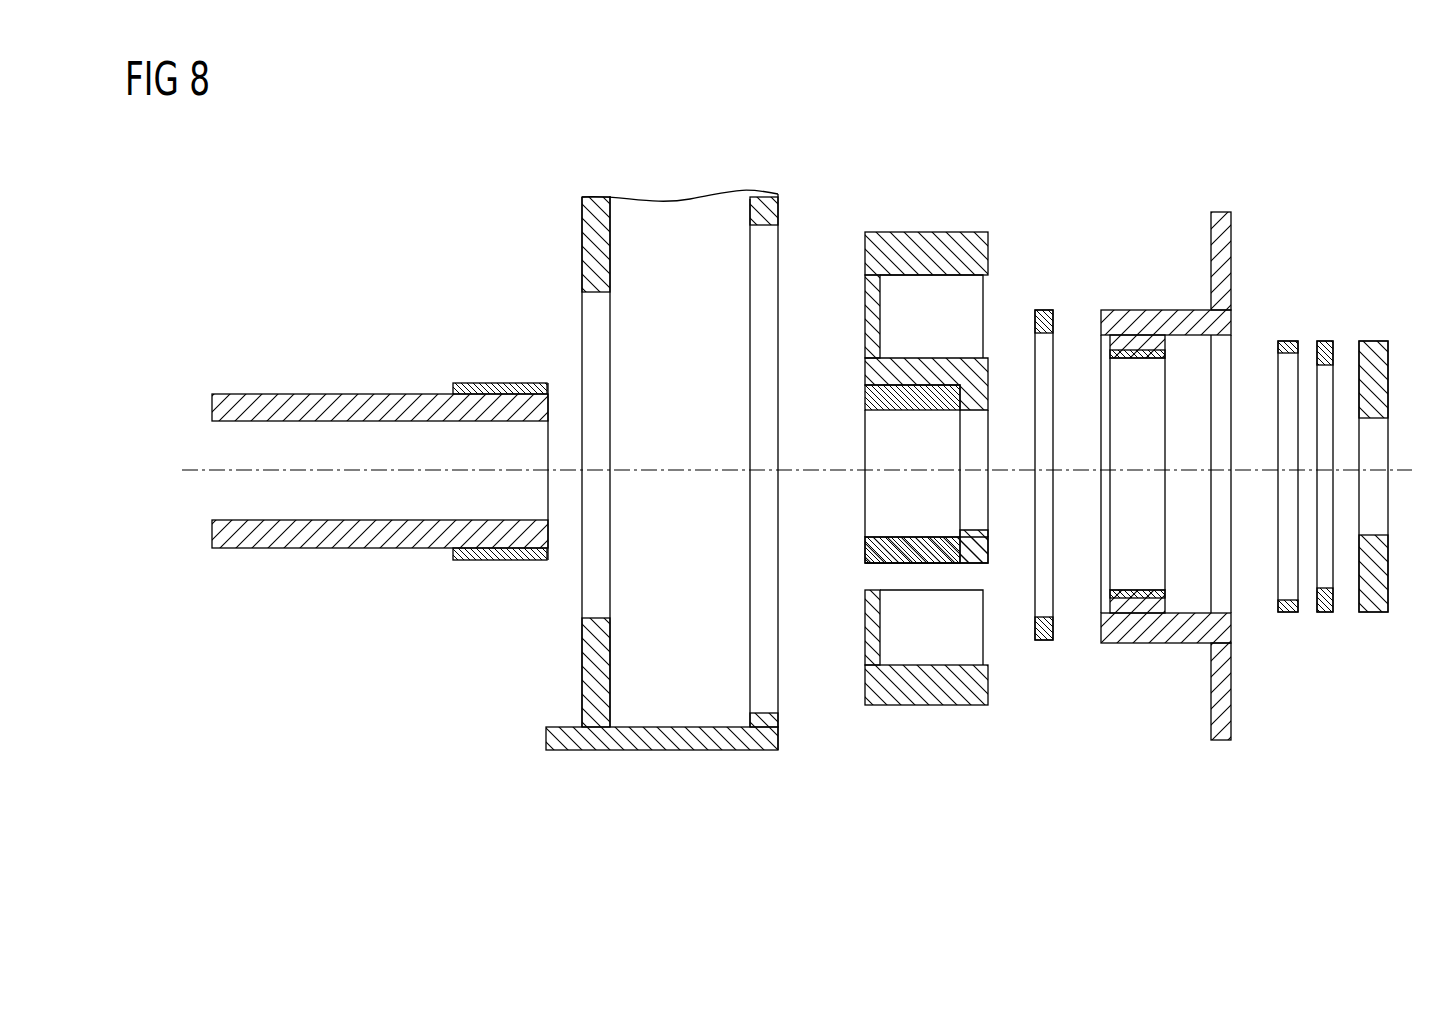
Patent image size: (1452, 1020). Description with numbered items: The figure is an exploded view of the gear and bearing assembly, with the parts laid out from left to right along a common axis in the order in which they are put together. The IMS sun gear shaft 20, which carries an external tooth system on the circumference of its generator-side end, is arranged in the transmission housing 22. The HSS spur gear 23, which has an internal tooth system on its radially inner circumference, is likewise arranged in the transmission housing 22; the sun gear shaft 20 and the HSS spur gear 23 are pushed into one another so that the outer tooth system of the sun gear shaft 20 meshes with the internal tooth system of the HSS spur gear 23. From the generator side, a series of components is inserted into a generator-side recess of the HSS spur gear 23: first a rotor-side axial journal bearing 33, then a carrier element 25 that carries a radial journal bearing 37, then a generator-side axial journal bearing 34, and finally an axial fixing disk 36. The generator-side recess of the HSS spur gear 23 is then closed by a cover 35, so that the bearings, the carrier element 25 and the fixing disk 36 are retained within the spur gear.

The IMS sun gear shaft 20 is at (278, 412).
The transmission housing 22 is at (665, 750).
The HSS spur gear 23 is at (921, 240).
The carrier element 25 is at (1222, 211).
The rotor-side axial journal bearing 33 is at (1042, 310).
The generator-side axial journal bearing 34 is at (1285, 340).
The cover 35 is at (1380, 368).
The axial fixing disk 36 is at (1325, 340).
The radial journal bearing 37 is at (1143, 323).